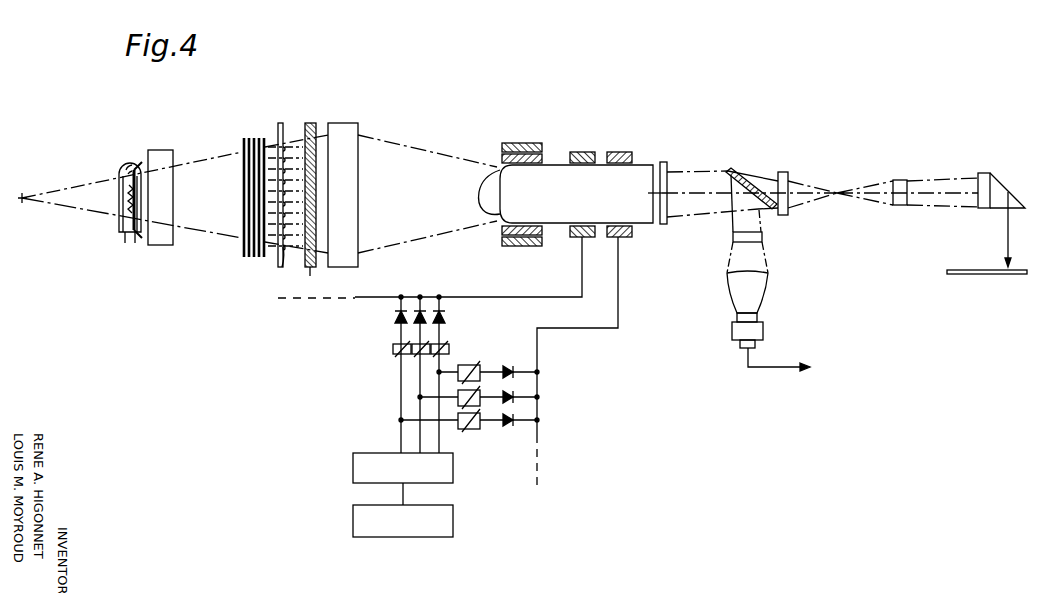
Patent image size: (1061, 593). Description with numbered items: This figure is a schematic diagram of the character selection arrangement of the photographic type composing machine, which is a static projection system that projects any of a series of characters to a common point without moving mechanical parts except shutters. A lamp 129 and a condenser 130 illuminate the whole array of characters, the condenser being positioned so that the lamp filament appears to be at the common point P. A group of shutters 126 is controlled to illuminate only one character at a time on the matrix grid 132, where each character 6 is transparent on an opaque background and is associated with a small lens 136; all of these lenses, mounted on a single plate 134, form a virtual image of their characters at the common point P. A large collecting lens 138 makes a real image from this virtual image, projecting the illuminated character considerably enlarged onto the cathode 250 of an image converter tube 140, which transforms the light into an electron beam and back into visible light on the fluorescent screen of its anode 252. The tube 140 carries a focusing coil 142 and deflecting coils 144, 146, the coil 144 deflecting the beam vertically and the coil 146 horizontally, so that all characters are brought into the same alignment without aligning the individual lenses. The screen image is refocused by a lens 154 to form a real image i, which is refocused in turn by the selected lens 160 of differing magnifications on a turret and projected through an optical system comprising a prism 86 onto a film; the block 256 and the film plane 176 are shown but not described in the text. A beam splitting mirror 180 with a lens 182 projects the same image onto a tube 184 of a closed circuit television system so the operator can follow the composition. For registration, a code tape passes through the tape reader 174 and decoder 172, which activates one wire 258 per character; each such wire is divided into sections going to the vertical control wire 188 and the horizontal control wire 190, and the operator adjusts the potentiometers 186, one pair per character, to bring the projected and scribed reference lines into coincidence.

The common point P is at (18, 209).
The lamp 129 is at (127, 164).
The condenser 130 is at (161, 150).
The shutters 126 is at (269, 132).
The grid 132 is at (281, 124).
The character 6 is at (281, 259).
The plate 134 is at (311, 123).
The small lens 136 is at (310, 268).
The collecting lens 138 is at (350, 128).
The cathode 250 is at (482, 180).
The tube 140 is at (556, 165).
The focusing coil 142 is at (544, 152).
The deflecting coil 144 is at (584, 152).
The deflecting coil 146 is at (622, 152).
The anode 252 is at (670, 218).
The beam splitting mirror 180 is at (740, 170).
The lens 154 is at (785, 171).
The real image i is at (835, 168).
The lens 160 is at (900, 180).
The prism block 256 is at (984, 173).
The prism 86 is at (1013, 182).
The photosensitive film 176 is at (983, 274).
The lens 182 is at (765, 237).
The tube 184 is at (768, 290).
The horizontal control wire 190 is at (430, 267).
The vertical control wire 188 is at (609, 334).
The potentiometer 186 is at (462, 365).
The wire 258 is at (442, 437).
The decoder 172 is at (403, 468).
The tape reader 174 is at (403, 521).